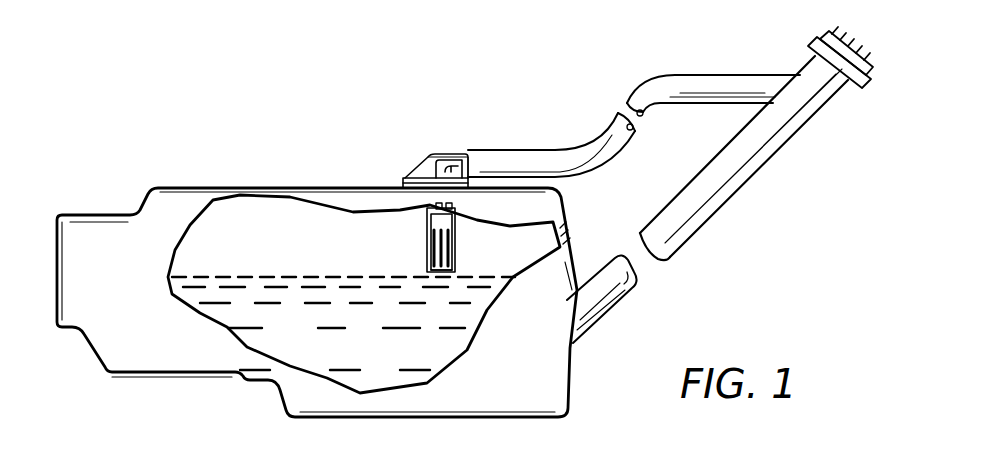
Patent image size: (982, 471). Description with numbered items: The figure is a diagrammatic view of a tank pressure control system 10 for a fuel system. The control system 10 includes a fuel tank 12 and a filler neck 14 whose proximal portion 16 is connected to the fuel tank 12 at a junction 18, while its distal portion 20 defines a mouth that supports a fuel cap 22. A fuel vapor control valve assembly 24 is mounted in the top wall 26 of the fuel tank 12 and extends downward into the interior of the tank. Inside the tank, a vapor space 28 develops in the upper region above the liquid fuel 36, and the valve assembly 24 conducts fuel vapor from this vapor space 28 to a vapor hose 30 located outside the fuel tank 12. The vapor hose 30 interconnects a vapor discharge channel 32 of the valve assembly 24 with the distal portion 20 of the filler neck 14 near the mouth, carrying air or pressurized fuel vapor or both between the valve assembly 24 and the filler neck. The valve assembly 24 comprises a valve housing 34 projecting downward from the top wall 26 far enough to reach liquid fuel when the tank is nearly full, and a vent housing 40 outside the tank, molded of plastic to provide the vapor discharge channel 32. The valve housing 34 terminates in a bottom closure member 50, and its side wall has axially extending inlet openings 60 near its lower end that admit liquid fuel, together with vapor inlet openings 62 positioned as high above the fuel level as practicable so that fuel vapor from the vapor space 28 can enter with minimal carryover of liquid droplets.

The tank pressure control system 10 is at (574, 73).
The fuel tank 12 is at (105, 208).
The filler neck 14 is at (736, 200).
The proximal portion 16 is at (591, 330).
The junction 18 is at (557, 337).
The distal portion 20 is at (822, 92).
The fuel cap 22 is at (807, 43).
The fuel vapor control valve assembly 24 is at (433, 146).
The top wall 26 is at (343, 185).
The vapor space 28 is at (241, 220).
The vapor hose 30 is at (657, 76).
The vapor discharge channel 32 is at (461, 153).
The valve housing 34 is at (421, 222).
The liquid fuel 36 is at (356, 353).
The vent housing 40 is at (423, 167).
The bottom closure member 50 is at (450, 273).
The inlet openings 60 is at (428, 254).
The vapor inlet openings 62 is at (453, 210).